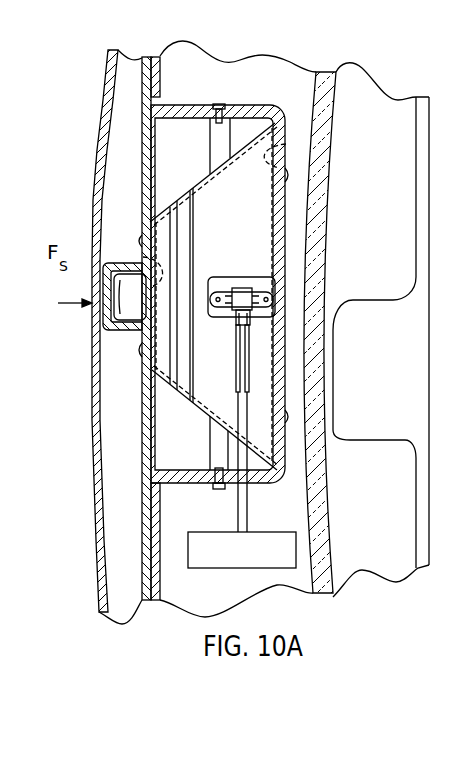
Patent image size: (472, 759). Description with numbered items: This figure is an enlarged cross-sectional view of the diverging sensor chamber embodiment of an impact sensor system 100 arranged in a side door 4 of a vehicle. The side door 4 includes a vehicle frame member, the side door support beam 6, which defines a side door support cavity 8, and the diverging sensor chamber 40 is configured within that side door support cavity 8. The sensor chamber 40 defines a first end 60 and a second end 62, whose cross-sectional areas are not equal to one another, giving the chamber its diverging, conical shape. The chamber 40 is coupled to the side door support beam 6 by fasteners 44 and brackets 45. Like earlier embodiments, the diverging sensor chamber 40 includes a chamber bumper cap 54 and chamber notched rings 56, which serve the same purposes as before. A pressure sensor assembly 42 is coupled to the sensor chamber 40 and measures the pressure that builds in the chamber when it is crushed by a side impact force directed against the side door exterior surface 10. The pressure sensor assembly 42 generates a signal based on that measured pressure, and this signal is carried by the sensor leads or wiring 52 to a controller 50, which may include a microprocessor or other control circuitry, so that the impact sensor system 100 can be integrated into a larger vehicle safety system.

The side door 4 is at (88, 312).
The side door support beam 6 is at (132, 389).
The side door support cavity 8 is at (170, 448).
The side door exterior surface 10 is at (106, 88).
The sensor chamber 40 is at (169, 294).
The pressure sensor assembly 42 is at (254, 293).
The fasteners 44 is at (220, 104).
The brackets 45 is at (228, 136).
The controller 50 is at (258, 531).
The sensor leads 52 is at (237, 357).
The chamber bumper cap 54 is at (104, 268).
The chamber notched rings 56 is at (197, 251).
The first end 60 is at (143, 257).
The second end 62 is at (283, 147).
The impact sensor system 100 is at (240, 62).